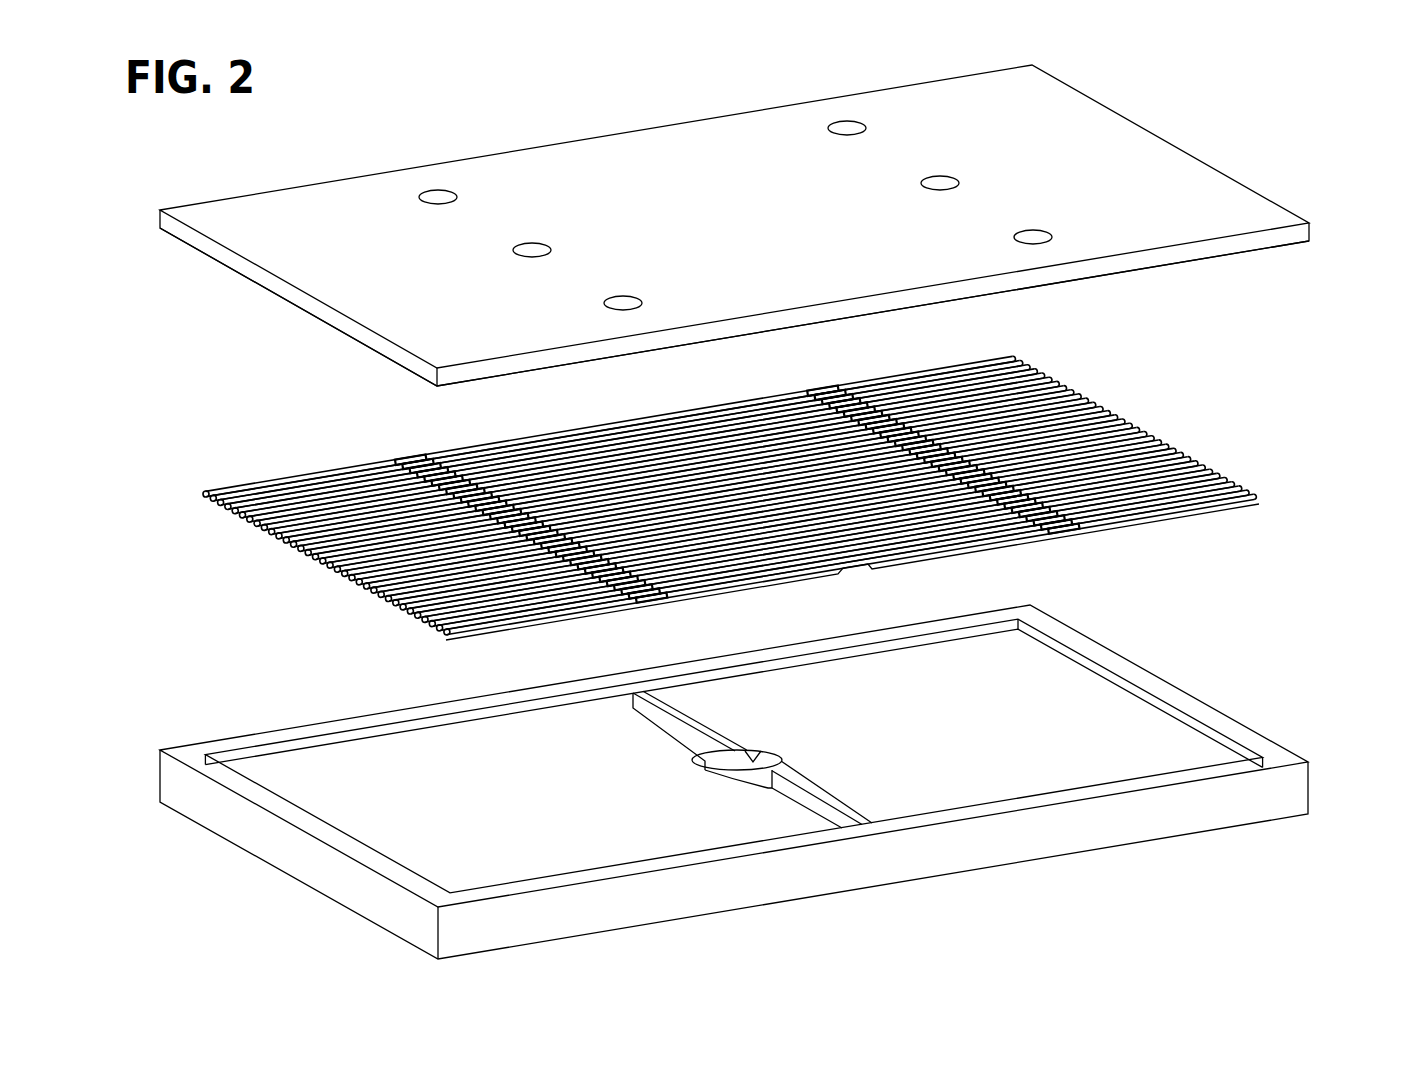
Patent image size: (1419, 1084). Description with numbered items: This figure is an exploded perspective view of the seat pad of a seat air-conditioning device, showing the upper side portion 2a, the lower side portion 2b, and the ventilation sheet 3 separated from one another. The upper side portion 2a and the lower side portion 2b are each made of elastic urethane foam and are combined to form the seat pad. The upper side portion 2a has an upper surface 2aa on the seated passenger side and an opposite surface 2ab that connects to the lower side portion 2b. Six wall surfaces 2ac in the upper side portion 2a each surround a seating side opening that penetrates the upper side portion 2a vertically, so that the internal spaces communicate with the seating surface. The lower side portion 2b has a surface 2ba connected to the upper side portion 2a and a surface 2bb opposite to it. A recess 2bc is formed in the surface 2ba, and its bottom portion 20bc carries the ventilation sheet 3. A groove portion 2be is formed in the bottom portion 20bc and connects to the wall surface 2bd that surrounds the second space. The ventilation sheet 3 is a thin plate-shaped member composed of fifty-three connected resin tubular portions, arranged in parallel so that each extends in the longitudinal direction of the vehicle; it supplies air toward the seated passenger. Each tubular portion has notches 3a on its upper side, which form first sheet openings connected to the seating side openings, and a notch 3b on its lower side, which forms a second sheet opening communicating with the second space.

The upper side portion 2a is at (1213, 167).
The upper surface 2aa is at (303, 213).
The surface connected to the lower side portion 2ab is at (413, 330).
The wall surface 2ac is at (438, 195).
The lower side portion 2b is at (1313, 791).
The surface connected to the upper side portion 2ba is at (188, 753).
The surface opposite to surface 2ba 2bb is at (383, 909).
The recess 2bc is at (266, 756).
The bottom portion 20bc is at (368, 764).
The wall surface 2bd is at (758, 758).
The groove portion 2be is at (643, 722).
The ventilation sheet 3 is at (1040, 373).
The notch 3a is at (410, 460).
The notch 3b is at (848, 573).